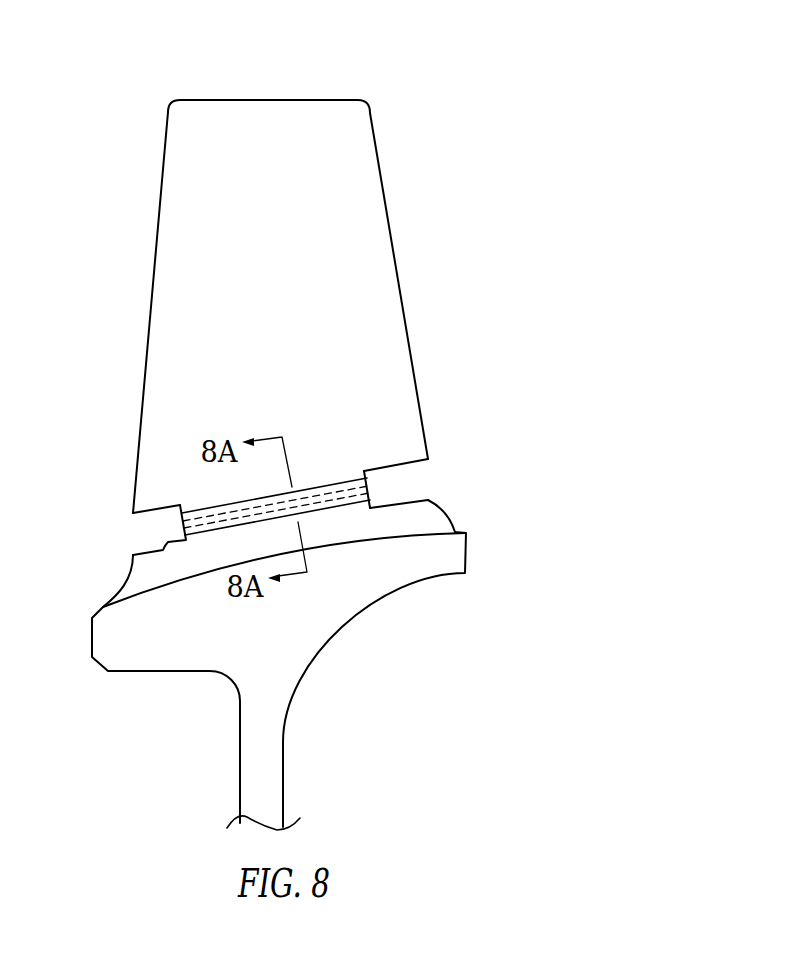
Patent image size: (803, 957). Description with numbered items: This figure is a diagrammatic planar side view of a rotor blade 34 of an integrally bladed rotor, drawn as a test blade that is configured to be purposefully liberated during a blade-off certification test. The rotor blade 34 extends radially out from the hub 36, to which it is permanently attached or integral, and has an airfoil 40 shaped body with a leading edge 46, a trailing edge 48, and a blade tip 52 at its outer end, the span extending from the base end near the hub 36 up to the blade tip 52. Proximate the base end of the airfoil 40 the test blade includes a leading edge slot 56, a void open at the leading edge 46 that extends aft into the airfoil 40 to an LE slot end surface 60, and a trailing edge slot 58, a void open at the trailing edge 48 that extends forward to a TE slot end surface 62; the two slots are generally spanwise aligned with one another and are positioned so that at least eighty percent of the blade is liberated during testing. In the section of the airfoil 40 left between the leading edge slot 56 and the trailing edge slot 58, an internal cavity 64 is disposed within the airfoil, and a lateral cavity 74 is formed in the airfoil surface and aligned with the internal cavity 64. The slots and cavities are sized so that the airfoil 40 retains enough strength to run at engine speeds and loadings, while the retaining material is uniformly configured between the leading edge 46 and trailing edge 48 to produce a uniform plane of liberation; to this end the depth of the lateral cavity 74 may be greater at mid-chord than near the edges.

The rotor blade 34 is at (491, 44).
The hub 36 is at (138, 653).
The airfoil 40 is at (256, 225).
The leading edge 46 is at (150, 325).
The trailing edge 48 is at (403, 303).
The blade tip 52 is at (297, 99).
The leading edge slot 56 is at (116, 536).
The trailing edge slot 58 is at (447, 475).
The LE slot end surface 60 is at (162, 552).
The TE slot end surface 62 is at (380, 502).
The internal cavity 64 is at (341, 482).
The lateral cavity 74 is at (322, 480).